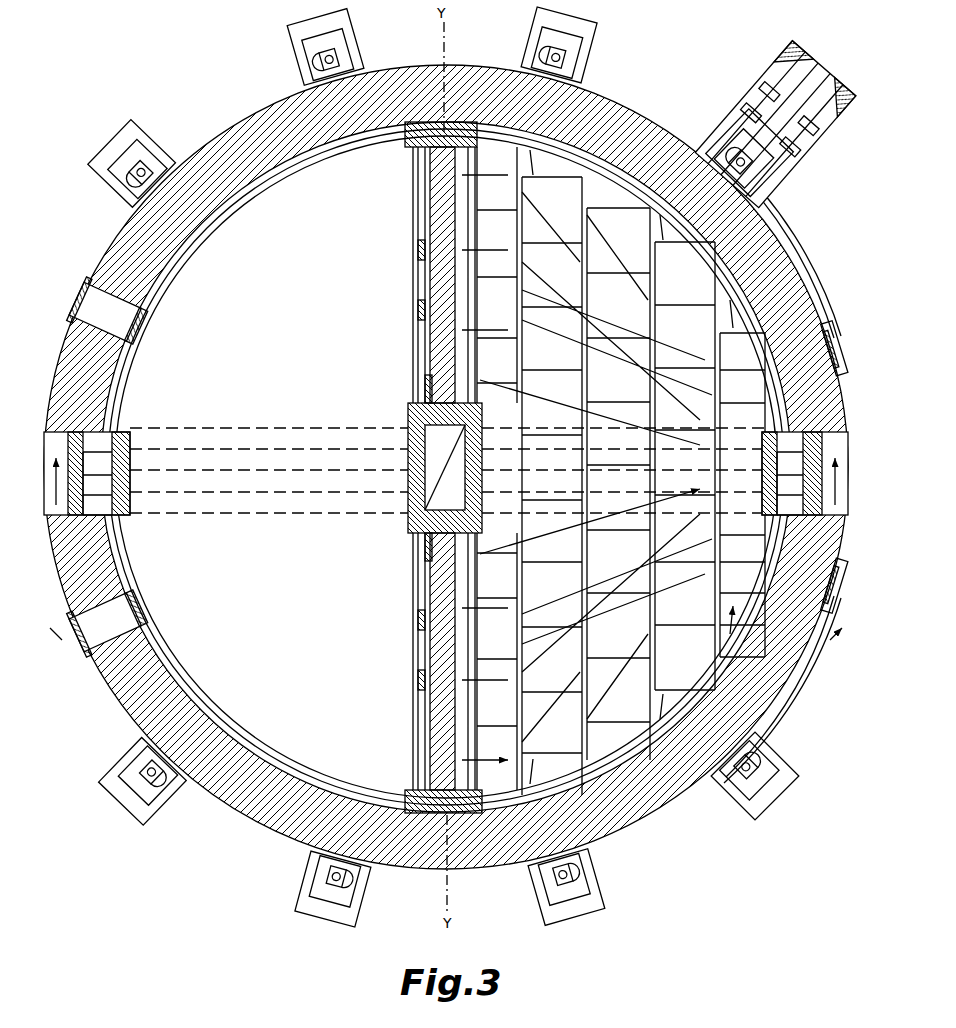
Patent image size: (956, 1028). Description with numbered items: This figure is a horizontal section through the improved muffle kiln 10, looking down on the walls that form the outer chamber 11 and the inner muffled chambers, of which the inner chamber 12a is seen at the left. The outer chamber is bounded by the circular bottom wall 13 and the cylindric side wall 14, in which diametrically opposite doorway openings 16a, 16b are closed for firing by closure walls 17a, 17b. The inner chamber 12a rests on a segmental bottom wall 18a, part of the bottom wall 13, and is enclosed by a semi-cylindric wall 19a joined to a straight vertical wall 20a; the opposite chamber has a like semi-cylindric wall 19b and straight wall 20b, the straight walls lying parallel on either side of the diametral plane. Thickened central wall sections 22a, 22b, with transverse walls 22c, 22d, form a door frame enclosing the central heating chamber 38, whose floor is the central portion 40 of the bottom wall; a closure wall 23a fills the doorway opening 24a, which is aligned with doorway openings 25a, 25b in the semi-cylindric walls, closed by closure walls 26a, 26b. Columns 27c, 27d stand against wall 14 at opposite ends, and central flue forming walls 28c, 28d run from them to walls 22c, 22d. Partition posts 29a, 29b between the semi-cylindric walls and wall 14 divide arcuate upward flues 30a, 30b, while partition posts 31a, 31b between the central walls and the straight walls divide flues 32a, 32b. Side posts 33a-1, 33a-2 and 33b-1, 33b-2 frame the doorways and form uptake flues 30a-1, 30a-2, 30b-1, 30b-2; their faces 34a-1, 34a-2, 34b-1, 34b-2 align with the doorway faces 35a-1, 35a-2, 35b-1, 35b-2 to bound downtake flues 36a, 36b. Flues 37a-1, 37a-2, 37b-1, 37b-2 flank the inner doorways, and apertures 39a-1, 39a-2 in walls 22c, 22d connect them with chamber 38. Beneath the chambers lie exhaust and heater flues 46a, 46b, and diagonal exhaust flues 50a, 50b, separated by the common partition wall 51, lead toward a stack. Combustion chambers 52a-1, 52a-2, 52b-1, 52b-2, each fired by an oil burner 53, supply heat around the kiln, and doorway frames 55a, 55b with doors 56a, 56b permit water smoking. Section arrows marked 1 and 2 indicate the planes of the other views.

The muffle kiln 10 is at (640, 125).
The outer chamber 11 is at (232, 718).
The inner chamber 12a is at (298, 608).
The bottom wall 13 is at (272, 150).
The cylindric side wall 14 is at (232, 150).
The doorway opening 16a is at (87, 473).
The doorway opening 16b is at (806, 471).
The closure wall 17a is at (101, 464).
The closure wall 17b is at (793, 454).
The segmental bottom wall 18a is at (258, 638).
The semi-cylindric wall 19a is at (272, 745).
The semi-cylindric wall 19b is at (626, 725).
The straight vertical wall 20a is at (430, 612).
The straight vertical wall 20b is at (470, 575).
The central rectangular wall section 22a is at (425, 515).
The central rectangular wall section 22b is at (478, 512).
The door frame wall 22c is at (451, 441).
The door frame wall 22d is at (451, 492).
The closure wall 23a is at (420, 485).
The doorway opening 24a is at (420, 502).
The doorway opening 25a is at (130, 425).
The doorway opening 25b is at (737, 409).
The closure wall 26a is at (101, 483).
The closure wall 26b is at (793, 472).
The column 27c is at (408, 150).
The column 27d is at (412, 795).
The central vertical flue forming wall 28c is at (428, 290).
The central vertical flue forming wall 28d is at (430, 648).
The partition posts 29a is at (290, 758).
The partition posts 29b is at (630, 735).
The arcuate flues 30a is at (356, 742).
The arcuate flues 30b is at (530, 790).
The uptake flue 30a-1 is at (130, 363).
The uptake flue 30a-2 is at (130, 570).
The uptake flue 30b-1 is at (742, 356).
The uptake flue 30b-2 is at (740, 555).
The partition posts 31a is at (430, 582).
The partition posts 31b is at (475, 693).
The flues 32a is at (418, 626).
The flues 32b is at (475, 733).
The side post 33a-1 is at (130, 415).
The side post 33a-2 is at (130, 522).
The side post 33b-1 is at (742, 391).
The side post 33b-2 is at (742, 534).
The side post face 34a-1 is at (130, 437).
The side post face 34a-2 is at (130, 508).
The side post face 34b-1 is at (742, 431).
The side post face 34b-2 is at (742, 512).
The doorway side face 35a-1 is at (130, 458).
The doorway side face 35a-2 is at (130, 490).
The doorway side face 35b-1 is at (742, 447).
The doorway side face 35b-2 is at (742, 492).
The downtake flue 36a is at (101, 502).
The downtake flue 36b is at (793, 489).
The flue 37a-1 is at (425, 390).
The flue 37a-2 is at (425, 548).
The flue 37b-1 is at (470, 390).
The flue 37b-2 is at (470, 542).
The central heating chamber 38 is at (482, 472).
The apertures 39a-1 is at (410, 415).
The apertures 39a-2 is at (410, 525).
The central portion of bottom wall 40 is at (482, 492).
The exhaust and heater flue 46a is at (269, 470).
The exhaust and heater flue 46b is at (626, 470).
The diagonal exhaust flue 50a is at (818, 60).
The diagonal exhaust flue 50b is at (838, 120).
The common partition wall 51 is at (842, 90).
The combustion chamber 52a-1 is at (350, 45).
The combustion chamber 52a-2 is at (330, 915).
The combustion chamber 52b-1 is at (545, 48).
The combustion chamber 52b-2 is at (565, 915).
The oil burner 53 is at (570, 880).
The doorway frame 55a is at (109, 467).
The doorway frame 55b is at (784, 688).
The door 56a is at (78, 665).
The door 56b is at (840, 640).
The flow direction 1 is at (443, 495).
The flow direction 2 is at (447, 648).